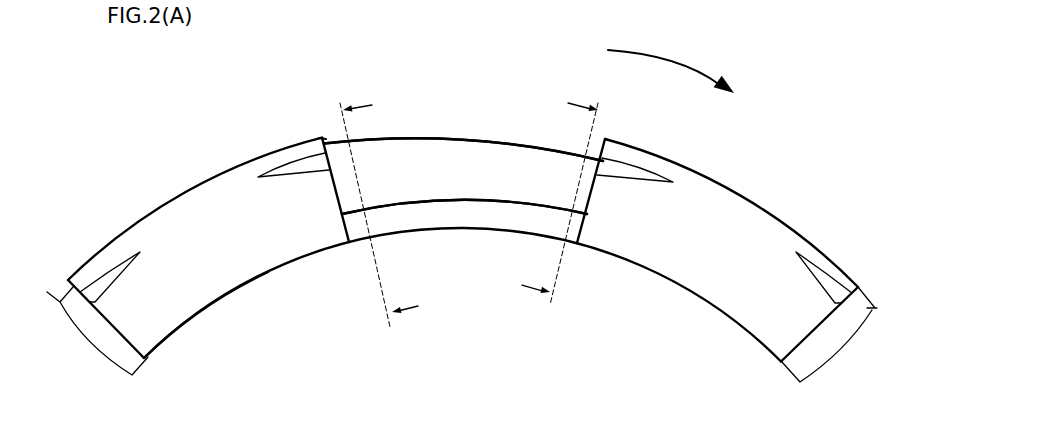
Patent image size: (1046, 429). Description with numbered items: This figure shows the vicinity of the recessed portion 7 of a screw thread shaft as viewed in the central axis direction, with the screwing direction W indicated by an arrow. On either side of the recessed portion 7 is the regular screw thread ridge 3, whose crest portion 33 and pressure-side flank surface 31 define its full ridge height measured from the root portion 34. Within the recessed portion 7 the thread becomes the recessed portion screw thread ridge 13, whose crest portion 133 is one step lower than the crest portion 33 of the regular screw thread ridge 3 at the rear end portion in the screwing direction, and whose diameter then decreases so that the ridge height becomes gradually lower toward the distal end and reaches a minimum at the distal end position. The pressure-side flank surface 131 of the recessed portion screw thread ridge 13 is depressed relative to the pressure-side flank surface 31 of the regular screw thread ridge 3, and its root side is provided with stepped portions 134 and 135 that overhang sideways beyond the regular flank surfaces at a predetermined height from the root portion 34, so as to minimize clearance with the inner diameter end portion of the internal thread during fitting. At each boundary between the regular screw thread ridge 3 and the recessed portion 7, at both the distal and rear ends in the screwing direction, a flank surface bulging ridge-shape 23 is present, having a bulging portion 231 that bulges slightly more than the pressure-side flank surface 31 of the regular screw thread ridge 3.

The recessed portion 7 is at (418, 124).
The regular screw thread ridge 3 is at (150, 198).
The recessed portion screw thread ridge 13 is at (489, 131).
The flank surface bulging ridge-shape 23 is at (316, 130).
The bulging portion 231 is at (310, 170).
The pressure-side flank surface 31 is at (262, 232).
The crest portion 33 is at (237, 163).
The root portion 34 is at (268, 272).
The pressure-side flank surface 131 is at (403, 178).
The crest portion 133 is at (463, 113).
The stepped portion 134 is at (443, 199).
The stepped portion 135 is at (464, 259).